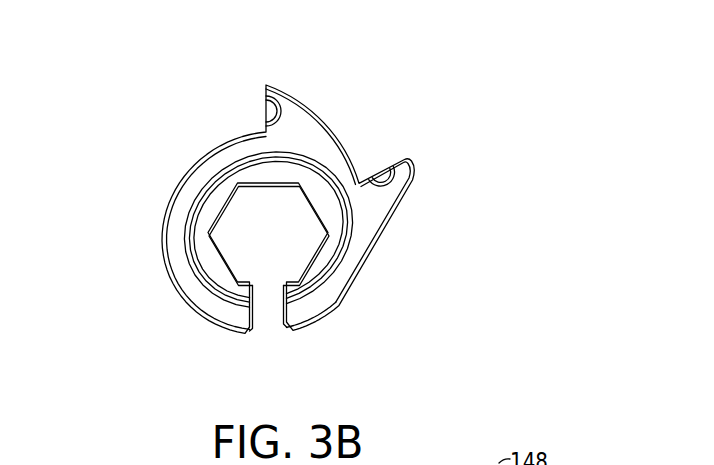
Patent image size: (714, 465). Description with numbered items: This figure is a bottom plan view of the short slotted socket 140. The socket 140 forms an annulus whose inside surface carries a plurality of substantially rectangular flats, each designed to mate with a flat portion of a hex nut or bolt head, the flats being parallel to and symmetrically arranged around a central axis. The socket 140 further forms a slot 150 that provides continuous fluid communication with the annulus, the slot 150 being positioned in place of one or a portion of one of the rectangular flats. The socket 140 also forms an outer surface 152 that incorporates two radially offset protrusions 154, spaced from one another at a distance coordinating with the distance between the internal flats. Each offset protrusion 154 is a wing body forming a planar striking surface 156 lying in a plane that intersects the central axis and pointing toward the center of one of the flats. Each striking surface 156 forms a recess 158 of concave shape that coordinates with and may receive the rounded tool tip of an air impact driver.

The short slotted socket 140 is at (497, 237).
The slot 150 is at (256, 342).
The outer surface 152 is at (161, 212).
The radially offset protrusion 154 is at (290, 127).
The planar striking surface 156 is at (245, 93).
The recess 158 is at (277, 102).